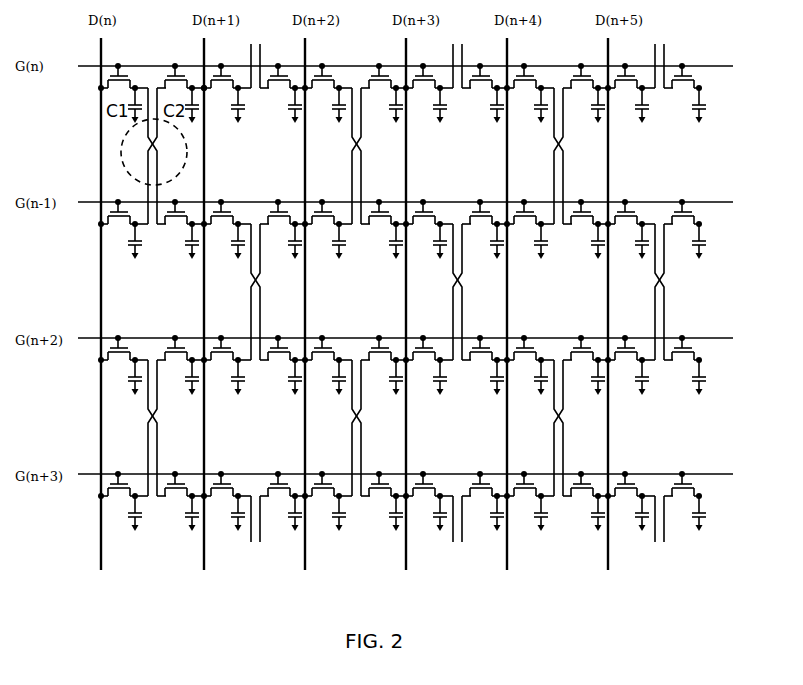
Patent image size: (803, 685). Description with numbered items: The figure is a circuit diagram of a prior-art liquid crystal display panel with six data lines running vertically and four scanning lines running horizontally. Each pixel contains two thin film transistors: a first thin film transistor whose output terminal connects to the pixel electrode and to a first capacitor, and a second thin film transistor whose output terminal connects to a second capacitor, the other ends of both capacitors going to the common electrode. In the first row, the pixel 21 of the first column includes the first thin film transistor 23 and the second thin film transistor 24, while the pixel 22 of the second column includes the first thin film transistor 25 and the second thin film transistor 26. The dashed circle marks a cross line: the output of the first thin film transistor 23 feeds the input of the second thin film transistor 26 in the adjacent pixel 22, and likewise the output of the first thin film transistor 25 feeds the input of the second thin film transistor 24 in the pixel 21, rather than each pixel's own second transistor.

The pixel 21 is at (101, 158).
The pixel 22 is at (101, 287).
The first thin film transistor 23 is at (121, 63).
The second thin film transistor 24 is at (178, 74).
The first thin film transistor 25 is at (114, 211).
The second thin film transistor 26 is at (165, 207).